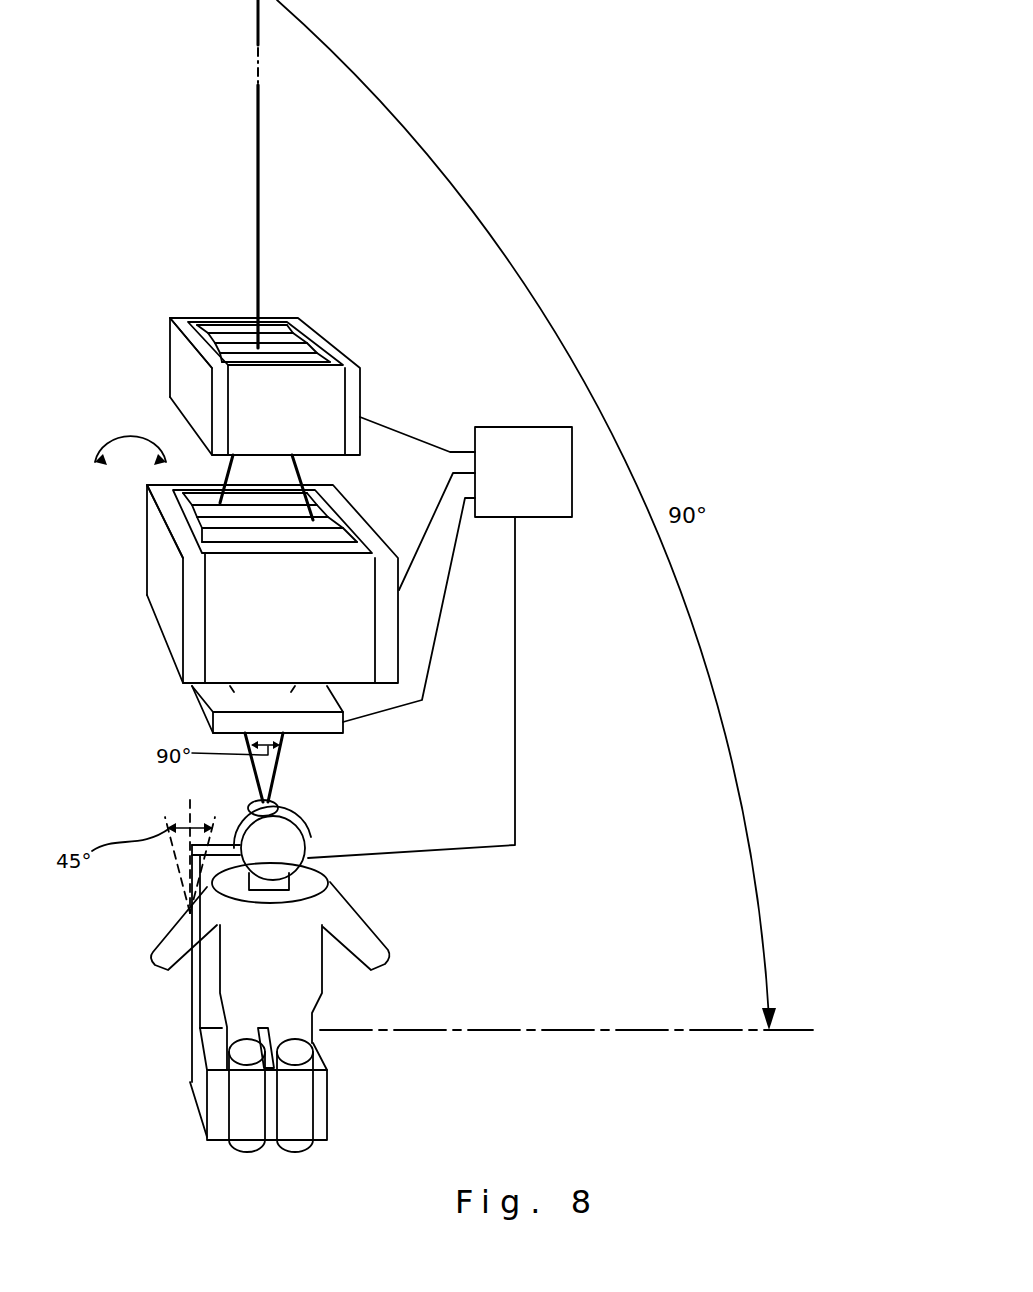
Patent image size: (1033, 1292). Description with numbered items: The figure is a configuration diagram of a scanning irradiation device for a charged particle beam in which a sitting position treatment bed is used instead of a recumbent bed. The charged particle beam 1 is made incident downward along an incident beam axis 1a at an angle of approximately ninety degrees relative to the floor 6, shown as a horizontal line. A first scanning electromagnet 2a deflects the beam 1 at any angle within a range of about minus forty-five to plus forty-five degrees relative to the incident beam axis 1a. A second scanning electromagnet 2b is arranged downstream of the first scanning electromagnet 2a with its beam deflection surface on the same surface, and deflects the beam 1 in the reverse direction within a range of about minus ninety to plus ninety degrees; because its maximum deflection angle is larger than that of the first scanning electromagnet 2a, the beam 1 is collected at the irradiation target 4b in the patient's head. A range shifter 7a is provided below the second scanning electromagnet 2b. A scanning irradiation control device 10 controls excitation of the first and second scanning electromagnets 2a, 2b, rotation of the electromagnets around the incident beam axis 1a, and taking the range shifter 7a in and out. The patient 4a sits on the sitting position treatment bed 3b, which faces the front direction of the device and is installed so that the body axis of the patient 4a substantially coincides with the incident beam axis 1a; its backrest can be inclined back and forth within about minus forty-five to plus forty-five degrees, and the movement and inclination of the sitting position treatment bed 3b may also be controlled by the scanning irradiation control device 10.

The charged particle beam 1 is at (258, 237).
The incident beam axis 1a is at (252, 152).
The first scanning electromagnet 2a is at (172, 362).
The second scanning electromagnet 2b is at (156, 547).
The range shifter 7a is at (222, 706).
The irradiation target 4b is at (243, 810).
The patient 4a is at (170, 943).
The sitting position treatment bed 3b is at (197, 1075).
The scanning irradiation control device 10 is at (554, 510).
The floor 6 is at (603, 1030).